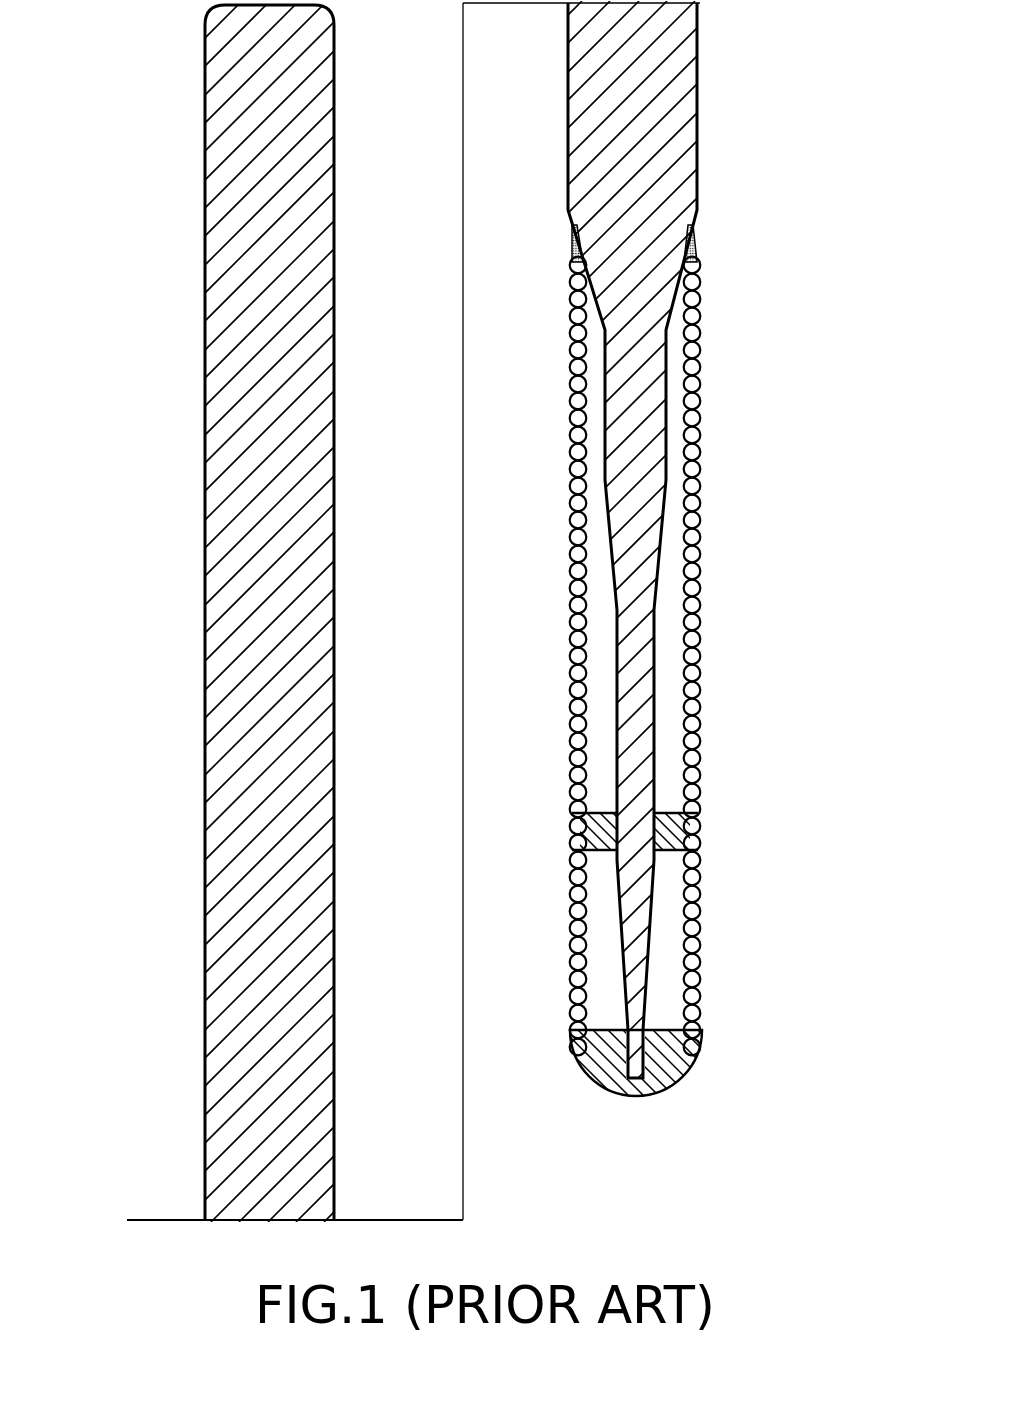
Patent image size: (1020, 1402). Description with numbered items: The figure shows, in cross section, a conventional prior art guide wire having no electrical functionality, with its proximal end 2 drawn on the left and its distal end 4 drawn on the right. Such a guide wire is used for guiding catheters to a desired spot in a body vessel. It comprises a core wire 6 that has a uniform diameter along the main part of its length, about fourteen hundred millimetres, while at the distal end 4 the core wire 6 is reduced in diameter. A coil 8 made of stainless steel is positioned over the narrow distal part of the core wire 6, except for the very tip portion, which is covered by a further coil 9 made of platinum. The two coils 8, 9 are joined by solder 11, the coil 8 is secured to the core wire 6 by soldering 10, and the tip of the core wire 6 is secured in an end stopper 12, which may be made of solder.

The proximal end 2 is at (510, 612).
The distal end 4 is at (510, 610).
The core wire 6 is at (228, 180).
The coil 8 is at (697, 677).
The further coil 9 is at (698, 978).
The soldering 10 is at (697, 243).
The solder 11 is at (697, 832).
The end stopper 12 is at (670, 1088).